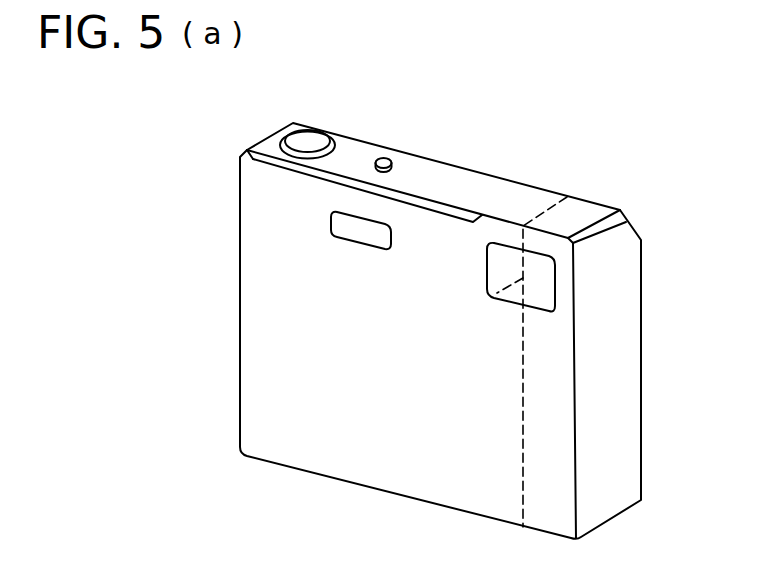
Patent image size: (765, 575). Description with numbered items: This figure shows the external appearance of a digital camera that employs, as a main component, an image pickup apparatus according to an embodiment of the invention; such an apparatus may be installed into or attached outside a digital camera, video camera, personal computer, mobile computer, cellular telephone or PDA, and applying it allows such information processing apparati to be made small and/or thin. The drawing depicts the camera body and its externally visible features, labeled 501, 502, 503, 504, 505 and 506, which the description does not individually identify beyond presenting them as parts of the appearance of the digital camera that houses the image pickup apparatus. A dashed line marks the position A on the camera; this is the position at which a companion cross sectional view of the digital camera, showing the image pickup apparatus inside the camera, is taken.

The camera body 501 is at (525, 200).
The shutter release button 502 is at (312, 140).
The power button 503 is at (385, 160).
The viewfinder window 504 is at (363, 247).
The front cover region 505 is at (469, 308).
The lens window 506 is at (547, 285).
The position A is at (563, 203).